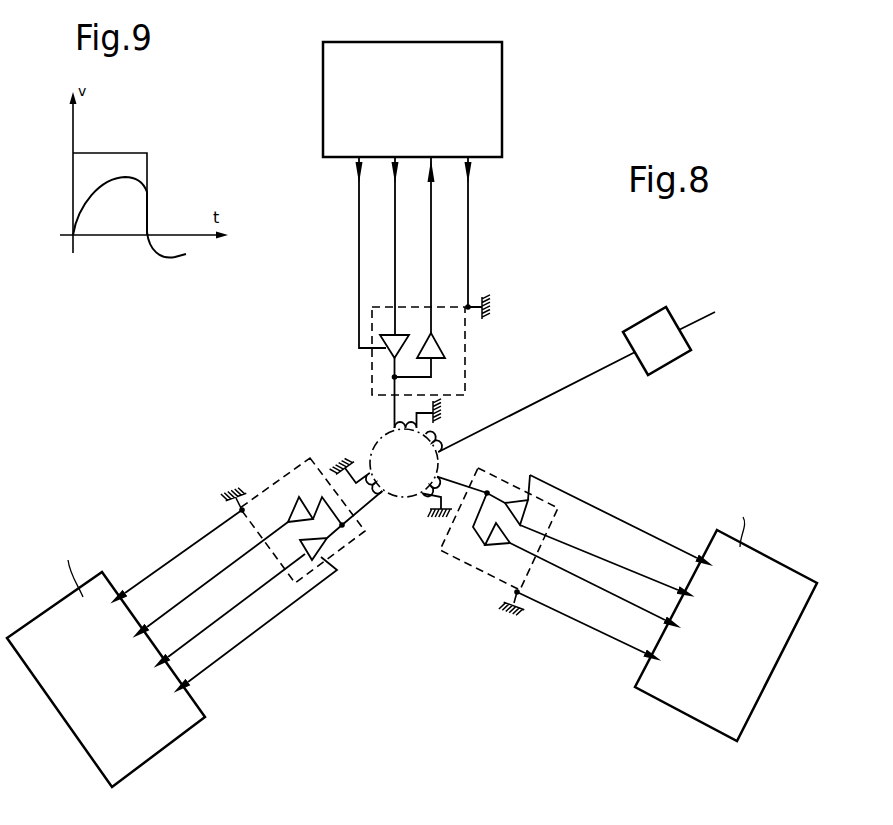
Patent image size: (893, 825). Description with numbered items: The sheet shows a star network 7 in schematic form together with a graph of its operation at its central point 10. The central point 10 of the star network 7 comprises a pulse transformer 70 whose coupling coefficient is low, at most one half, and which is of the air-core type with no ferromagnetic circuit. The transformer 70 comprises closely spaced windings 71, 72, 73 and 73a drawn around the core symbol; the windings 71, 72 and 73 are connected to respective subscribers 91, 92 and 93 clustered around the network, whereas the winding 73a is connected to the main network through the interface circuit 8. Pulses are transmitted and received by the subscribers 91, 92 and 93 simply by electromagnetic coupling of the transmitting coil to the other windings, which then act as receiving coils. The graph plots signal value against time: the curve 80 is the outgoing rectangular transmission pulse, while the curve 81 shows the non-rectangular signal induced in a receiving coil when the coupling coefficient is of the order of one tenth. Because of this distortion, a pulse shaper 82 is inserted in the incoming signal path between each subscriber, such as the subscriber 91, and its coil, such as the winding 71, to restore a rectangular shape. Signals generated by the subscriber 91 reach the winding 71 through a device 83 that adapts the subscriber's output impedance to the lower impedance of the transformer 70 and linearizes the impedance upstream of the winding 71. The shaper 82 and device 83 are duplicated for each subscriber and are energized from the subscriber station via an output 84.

In FIG. 8, the star network 7 is at (320, 394).
In FIG. 8, the interface circuit 8 is at (664, 352).
In FIG. 8, the central point 10 is at (373, 453).
In FIG. 8, the pulse transformer 70 is at (424, 437).
In FIG. 8, the winding 71 is at (381, 496).
In FIG. 8, the winding 72 is at (412, 496).
In FIG. 8, the winding 73 is at (391, 436).
In FIG. 8, the winding 73a is at (404, 463).
In FIG. 9, the curve 80 is at (110, 152).
In FIG. 9, the curve 81 is at (115, 176).
In FIG. 8, the pulse shaper 82 is at (290, 510).
In FIG. 8, the impedance adapting device 83 is at (328, 543).
In FIG. 8, the output 84 is at (192, 686).
In FIG. 8, the subscriber 91 is at (140, 737).
In FIG. 8, the subscriber 92 is at (720, 700).
In FIG. 8, the subscriber 93 is at (486, 84).